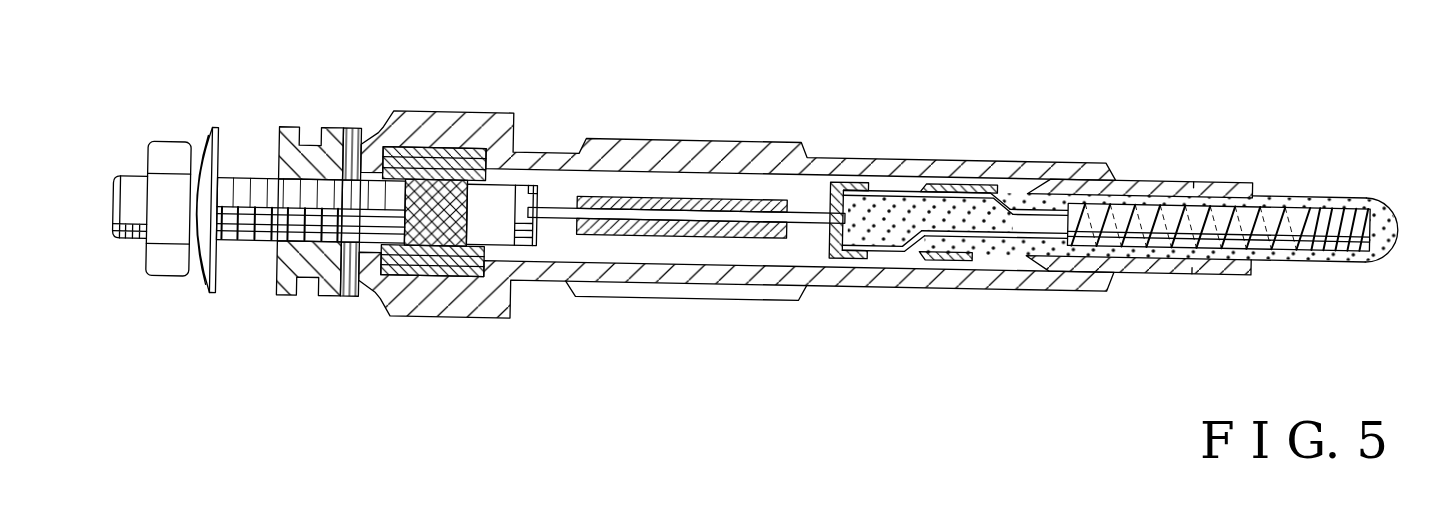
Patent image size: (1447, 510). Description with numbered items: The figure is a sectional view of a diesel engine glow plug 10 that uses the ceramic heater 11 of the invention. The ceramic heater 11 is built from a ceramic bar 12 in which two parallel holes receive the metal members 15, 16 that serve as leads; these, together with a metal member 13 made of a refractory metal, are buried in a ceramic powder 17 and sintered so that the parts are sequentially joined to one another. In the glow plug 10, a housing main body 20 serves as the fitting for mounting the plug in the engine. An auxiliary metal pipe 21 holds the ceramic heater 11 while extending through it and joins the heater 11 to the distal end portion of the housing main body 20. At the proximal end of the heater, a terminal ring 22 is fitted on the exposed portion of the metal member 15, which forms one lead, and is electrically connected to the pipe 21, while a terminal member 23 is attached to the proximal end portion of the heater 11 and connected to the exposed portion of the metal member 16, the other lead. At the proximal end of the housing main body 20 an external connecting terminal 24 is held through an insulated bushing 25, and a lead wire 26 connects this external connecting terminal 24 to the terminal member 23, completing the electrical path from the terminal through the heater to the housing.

The diesel engine glow plug 10 is at (1005, 102).
The ceramic heater 11 is at (1352, 160).
The ceramic bar 12 is at (1295, 186).
The metal member 13 is at (1330, 228).
The metal member 15 is at (1050, 200).
The metal member 16 is at (887, 234).
The ceramic powder 17 is at (1025, 241).
The housing main body 20 is at (712, 264).
The auxiliary metal pipe 21 is at (1158, 246).
The terminal ring 22 is at (956, 172).
The terminal member 23 is at (852, 170).
The external connecting terminal 24 is at (243, 238).
The insulated bushing 25 is at (427, 258).
The lead wire 26 is at (692, 206).